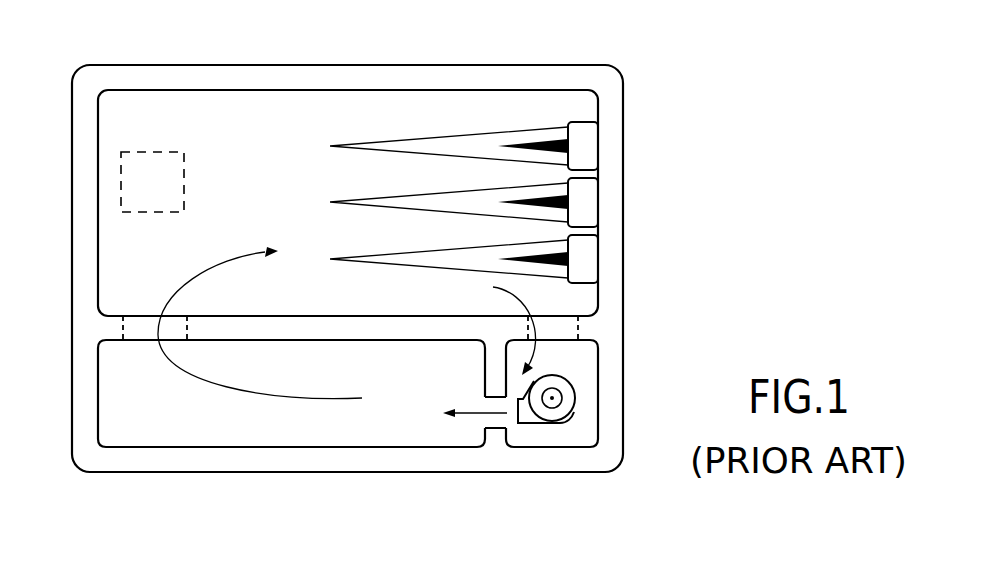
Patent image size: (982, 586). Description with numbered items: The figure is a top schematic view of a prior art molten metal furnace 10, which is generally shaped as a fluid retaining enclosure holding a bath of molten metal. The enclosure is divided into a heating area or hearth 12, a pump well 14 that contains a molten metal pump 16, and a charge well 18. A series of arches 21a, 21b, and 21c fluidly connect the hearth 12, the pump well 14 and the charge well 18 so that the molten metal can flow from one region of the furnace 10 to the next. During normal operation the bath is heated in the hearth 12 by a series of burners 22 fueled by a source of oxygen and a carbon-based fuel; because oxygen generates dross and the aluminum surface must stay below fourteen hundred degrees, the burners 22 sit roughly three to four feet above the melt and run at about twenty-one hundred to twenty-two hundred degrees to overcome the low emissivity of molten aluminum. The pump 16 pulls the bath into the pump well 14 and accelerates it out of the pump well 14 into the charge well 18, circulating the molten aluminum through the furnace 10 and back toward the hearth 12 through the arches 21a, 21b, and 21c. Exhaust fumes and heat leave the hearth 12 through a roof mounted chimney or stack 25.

The furnace 10 is at (657, 92).
The hearth 12 is at (463, 100).
The pump well 14 is at (582, 428).
The molten metal pump 16 is at (572, 383).
The charge well 18 is at (253, 430).
The arch 21a is at (563, 313).
The arch 21b is at (483, 423).
The arch 21c is at (142, 343).
The burners 22 is at (590, 267).
The stack 25 is at (133, 177).